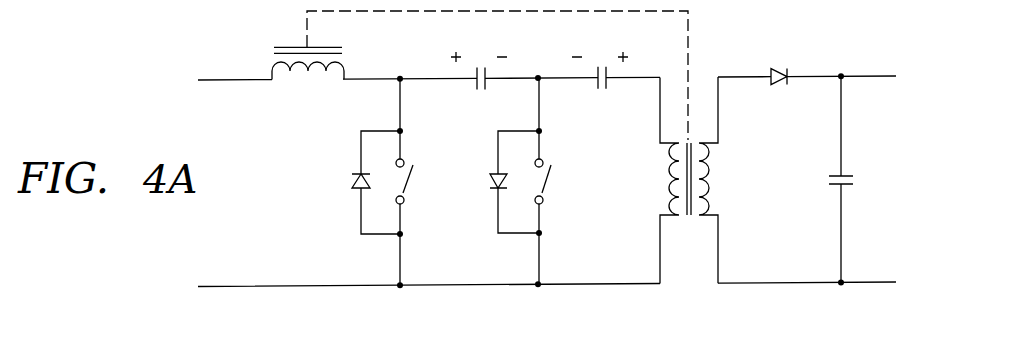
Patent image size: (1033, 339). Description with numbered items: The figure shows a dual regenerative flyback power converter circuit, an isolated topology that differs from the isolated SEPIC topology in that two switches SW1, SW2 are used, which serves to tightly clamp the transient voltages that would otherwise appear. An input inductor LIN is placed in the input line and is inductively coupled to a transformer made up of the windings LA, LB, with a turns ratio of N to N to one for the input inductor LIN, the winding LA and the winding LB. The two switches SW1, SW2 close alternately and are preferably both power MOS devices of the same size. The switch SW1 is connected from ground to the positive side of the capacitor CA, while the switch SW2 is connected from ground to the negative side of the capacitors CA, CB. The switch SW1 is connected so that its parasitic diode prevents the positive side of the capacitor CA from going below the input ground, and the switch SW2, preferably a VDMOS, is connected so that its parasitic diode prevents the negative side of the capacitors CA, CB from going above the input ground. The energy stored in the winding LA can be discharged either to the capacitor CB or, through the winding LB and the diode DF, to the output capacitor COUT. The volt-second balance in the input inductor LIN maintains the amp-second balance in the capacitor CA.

The input inductor LIN is at (308, 82).
The first switch SW1 is at (401, 182).
The second switch SW2 is at (540, 181).
The capacitor CA is at (479, 89).
The capacitor CB is at (600, 89).
The transformer primary winding LA is at (664, 180).
The transformer secondary winding LB is at (720, 180).
The output diode DF is at (780, 56).
The output capacitor COUT is at (871, 179).